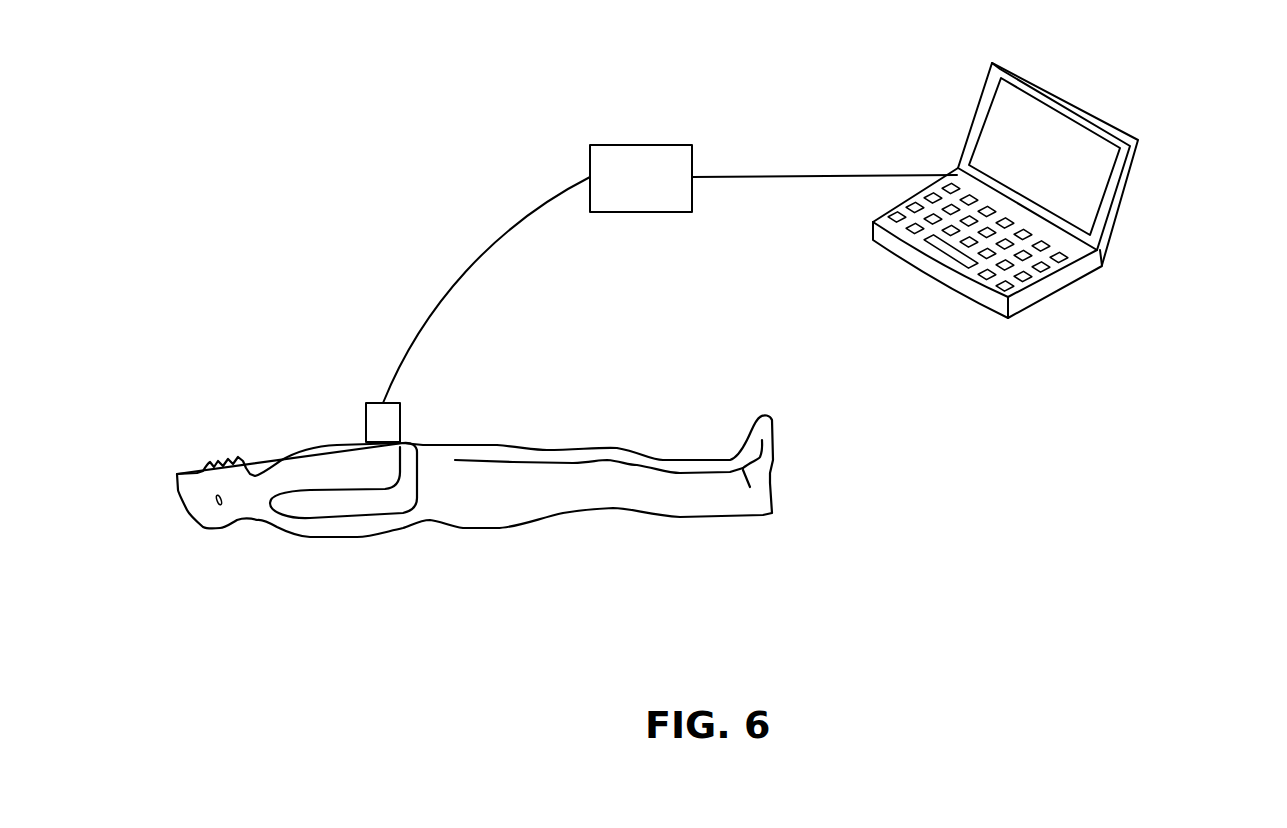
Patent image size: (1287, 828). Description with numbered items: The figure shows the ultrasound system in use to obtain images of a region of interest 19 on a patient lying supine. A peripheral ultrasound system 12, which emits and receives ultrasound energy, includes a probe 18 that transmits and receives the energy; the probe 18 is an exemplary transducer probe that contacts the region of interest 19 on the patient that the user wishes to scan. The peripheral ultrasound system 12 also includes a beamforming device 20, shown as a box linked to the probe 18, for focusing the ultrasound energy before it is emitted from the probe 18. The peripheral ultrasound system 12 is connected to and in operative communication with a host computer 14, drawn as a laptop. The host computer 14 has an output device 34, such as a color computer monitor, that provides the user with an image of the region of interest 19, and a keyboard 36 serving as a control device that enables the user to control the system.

The peripheral ultrasound system 12 is at (524, 278).
The host computer 14 is at (1050, 189).
The probe 18 is at (400, 412).
The region of interest 19 is at (443, 458).
The beamforming device 20 is at (653, 157).
The output device 34 is at (1005, 102).
The keyboard 36 is at (1068, 252).